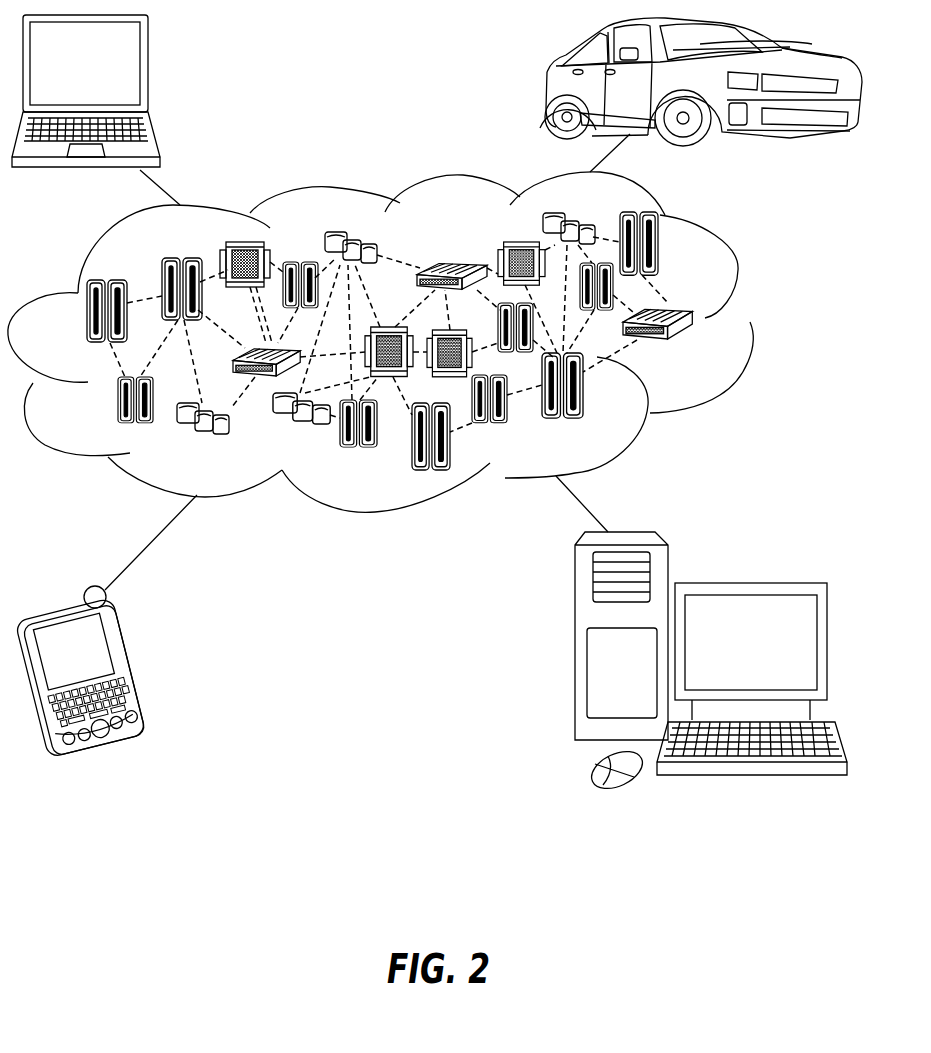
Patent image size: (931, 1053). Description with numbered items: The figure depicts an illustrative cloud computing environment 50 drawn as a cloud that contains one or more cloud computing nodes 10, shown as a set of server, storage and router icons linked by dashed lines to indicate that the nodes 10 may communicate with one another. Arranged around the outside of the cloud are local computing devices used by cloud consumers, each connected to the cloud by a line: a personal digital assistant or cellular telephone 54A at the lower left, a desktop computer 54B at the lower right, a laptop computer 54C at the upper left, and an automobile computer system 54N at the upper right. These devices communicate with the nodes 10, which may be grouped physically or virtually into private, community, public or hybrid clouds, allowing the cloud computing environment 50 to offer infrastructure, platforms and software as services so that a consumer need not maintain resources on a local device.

The cloud computing nodes 10 is at (690, 345).
The cloud computing environment 50 is at (745, 320).
The personal digital assistant (PDA) or cellular telephone 54A is at (140, 662).
The desktop computer 54B is at (748, 583).
The laptop computer 54C is at (148, 72).
The automobile computer system 54N is at (548, 88).